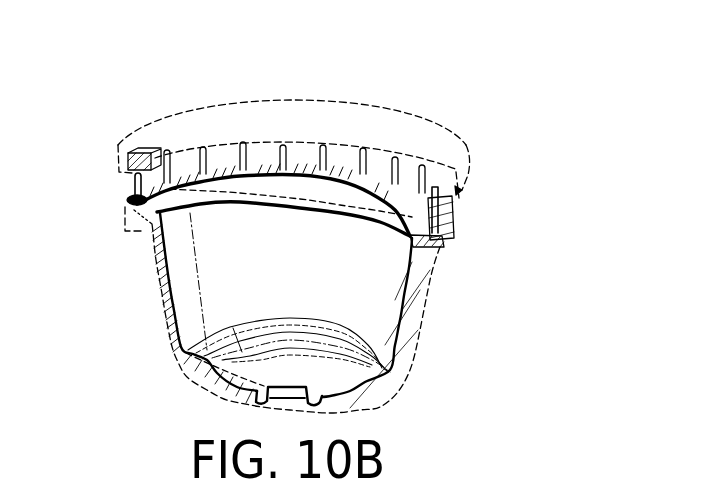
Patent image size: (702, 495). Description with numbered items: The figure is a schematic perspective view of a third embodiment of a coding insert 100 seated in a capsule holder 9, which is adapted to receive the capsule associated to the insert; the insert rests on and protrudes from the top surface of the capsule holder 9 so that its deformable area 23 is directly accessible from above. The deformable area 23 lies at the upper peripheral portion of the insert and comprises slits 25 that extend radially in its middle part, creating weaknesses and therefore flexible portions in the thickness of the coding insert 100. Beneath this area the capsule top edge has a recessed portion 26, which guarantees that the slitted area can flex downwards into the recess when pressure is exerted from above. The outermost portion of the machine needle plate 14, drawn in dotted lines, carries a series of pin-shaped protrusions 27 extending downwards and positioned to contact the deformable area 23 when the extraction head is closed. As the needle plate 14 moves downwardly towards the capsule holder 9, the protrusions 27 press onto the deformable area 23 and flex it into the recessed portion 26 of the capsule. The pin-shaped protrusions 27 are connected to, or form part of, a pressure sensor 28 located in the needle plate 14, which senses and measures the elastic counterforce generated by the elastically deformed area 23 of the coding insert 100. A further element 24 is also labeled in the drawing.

The capsule holder 9 is at (180, 366).
The machine needle plate 14 is at (263, 113).
The deformable area 23 is at (216, 170).
The sealing surface 24 is at (367, 200).
The slits 25 is at (200, 170).
The recessed portion 26 is at (440, 263).
The pin-shaped protrusions 27 is at (300, 152).
The pressure sensor 28 is at (147, 152).
The coding insert 100 is at (450, 238).